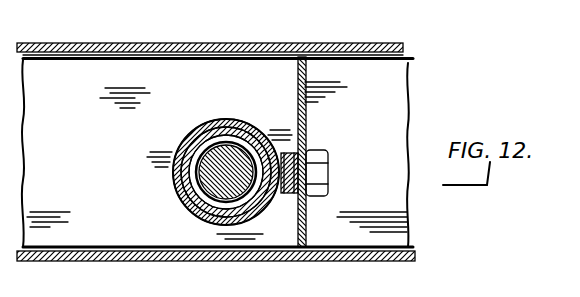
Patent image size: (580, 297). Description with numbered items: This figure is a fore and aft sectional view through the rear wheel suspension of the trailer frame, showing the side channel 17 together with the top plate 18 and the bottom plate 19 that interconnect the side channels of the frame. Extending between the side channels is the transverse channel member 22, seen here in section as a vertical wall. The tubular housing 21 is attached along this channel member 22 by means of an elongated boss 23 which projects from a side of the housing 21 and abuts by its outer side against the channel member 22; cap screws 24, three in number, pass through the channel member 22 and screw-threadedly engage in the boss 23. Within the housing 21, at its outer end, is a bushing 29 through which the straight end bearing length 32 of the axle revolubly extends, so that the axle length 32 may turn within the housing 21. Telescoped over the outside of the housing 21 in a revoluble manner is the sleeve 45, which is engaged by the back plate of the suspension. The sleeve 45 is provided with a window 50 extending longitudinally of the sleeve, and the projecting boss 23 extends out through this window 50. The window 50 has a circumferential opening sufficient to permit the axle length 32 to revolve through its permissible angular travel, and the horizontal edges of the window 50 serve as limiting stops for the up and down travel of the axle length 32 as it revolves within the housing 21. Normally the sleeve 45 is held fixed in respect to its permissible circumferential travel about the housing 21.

The side channel 17 is at (229, 72).
The top plate 18 is at (152, 47).
The bottom plate 19 is at (135, 255).
The tubular housing 21 is at (181, 195).
The transverse channel member 22 is at (305, 128).
The elongated boss 23 is at (305, 150).
The cap screws 24 is at (317, 182).
The bushing 29 is at (197, 217).
The straight end bearing length 32 is at (213, 175).
The sleeve 45 is at (200, 122).
The window 50 is at (249, 122).